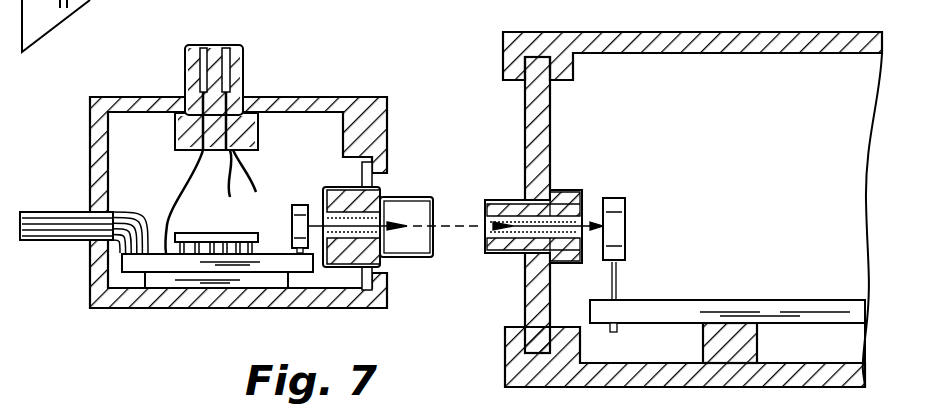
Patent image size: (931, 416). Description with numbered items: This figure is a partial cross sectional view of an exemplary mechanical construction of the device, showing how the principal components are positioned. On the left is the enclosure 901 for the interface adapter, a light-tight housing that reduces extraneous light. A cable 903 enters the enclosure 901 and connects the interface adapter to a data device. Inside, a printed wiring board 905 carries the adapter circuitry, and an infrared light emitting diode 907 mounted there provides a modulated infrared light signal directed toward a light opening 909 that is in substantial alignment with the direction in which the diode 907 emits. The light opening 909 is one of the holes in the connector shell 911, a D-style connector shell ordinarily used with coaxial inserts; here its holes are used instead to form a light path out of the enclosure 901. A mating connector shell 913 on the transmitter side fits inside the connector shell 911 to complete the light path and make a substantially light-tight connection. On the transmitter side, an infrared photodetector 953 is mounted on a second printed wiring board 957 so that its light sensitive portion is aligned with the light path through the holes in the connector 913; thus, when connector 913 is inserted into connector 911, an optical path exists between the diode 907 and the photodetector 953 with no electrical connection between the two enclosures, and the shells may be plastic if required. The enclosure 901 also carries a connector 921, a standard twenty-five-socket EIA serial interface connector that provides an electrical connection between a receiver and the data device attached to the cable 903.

The enclosure 901 is at (121, 97).
The cable 903 is at (48, 205).
The printed wiring board 905 is at (177, 266).
The infrared light emitting diode 907 is at (300, 205).
The light opening 909 is at (468, 228).
The connector shell 911 is at (392, 198).
The mating connector shell 913 is at (495, 200).
The connector 921 is at (190, 46).
The infrared photodetector 953 is at (626, 210).
The printed wiring board 957 is at (754, 300).